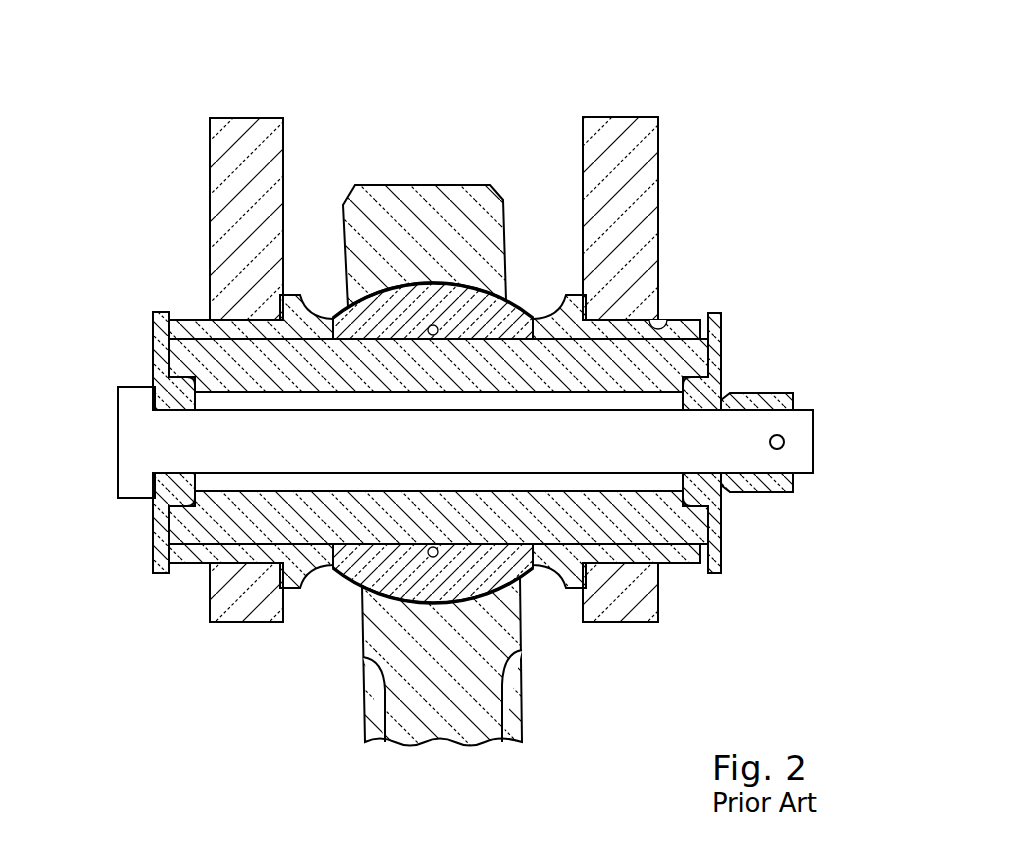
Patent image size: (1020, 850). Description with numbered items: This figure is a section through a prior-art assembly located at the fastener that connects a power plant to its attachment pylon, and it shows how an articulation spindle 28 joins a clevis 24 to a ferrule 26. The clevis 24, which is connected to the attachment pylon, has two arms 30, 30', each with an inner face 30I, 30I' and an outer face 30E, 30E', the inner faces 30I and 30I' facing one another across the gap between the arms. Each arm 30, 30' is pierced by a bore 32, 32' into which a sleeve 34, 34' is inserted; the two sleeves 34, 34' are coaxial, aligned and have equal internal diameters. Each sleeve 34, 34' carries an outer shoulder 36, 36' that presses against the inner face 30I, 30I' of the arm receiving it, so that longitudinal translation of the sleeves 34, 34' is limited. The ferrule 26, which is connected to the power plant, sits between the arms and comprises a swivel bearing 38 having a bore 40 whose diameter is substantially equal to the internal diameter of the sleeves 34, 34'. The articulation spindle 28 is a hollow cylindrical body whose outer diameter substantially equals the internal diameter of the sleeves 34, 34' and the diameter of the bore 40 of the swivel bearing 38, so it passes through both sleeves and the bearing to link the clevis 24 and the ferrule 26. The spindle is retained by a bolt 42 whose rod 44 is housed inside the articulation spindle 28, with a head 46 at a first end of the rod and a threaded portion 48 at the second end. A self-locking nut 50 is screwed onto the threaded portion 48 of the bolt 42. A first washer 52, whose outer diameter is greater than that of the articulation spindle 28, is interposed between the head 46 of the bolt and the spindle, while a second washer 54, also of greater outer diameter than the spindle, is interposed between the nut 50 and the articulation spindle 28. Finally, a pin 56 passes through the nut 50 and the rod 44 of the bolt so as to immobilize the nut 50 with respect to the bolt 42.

The clevis 24 is at (678, 185).
The ferrule 26 is at (528, 712).
The articulation spindle 28 is at (308, 363).
The arm 30 is at (238, 177).
The inner face 30I is at (307, 179).
The outer face 30E is at (155, 209).
The arm 30' is at (620, 177).
The inner face 30I' is at (548, 202).
The outer face 30E' is at (706, 195).
The bore 32 is at (217, 286).
The bore 32' is at (655, 290).
The sleeve 34 is at (239, 621).
The sleeve 34' is at (655, 591).
The outer shoulder 36 is at (246, 647).
The outer shoulder 36' is at (599, 634).
The swivel bearing 38 is at (427, 284).
The bore 40 is at (452, 358).
The bolt 42 is at (113, 453).
The rod 44 is at (345, 450).
The head 46 is at (143, 482).
The threaded portion 48 is at (762, 472).
The self-locking nut 50 is at (752, 400).
The first washer 52 is at (160, 322).
The second washer 54 is at (713, 548).
The pin 56 is at (783, 437).